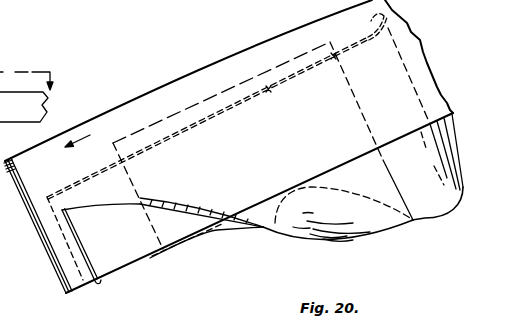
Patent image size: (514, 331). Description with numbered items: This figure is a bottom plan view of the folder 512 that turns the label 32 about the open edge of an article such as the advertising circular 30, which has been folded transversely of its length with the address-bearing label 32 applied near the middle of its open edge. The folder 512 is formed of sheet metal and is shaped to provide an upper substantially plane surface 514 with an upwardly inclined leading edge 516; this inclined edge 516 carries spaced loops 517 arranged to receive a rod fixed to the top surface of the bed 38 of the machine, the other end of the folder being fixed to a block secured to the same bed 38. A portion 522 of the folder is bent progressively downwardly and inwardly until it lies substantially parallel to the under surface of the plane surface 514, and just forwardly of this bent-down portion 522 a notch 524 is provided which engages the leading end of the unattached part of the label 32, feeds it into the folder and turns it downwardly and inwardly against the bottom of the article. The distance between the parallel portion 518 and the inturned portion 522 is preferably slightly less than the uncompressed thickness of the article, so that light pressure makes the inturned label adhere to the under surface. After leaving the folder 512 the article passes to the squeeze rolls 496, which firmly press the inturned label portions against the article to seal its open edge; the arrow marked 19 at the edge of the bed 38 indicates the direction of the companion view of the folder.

The band portion 19 is at (35, 77).
The advertising circular 30 is at (130, 102).
The label 32 is at (190, 104).
The bed 38 is at (18, 107).
The squeeze rolls 496 is at (0, 34).
The folder 512 is at (268, 90).
The upper substantially plane surface 514 is at (417, 207).
The upwardly inclined leading edge 516 is at (437, 154).
The spaced loops 517 is at (366, 31).
The parallel portion 518 is at (80, 254).
The bent down portion 522 is at (97, 217).
The notch 524 is at (247, 230).